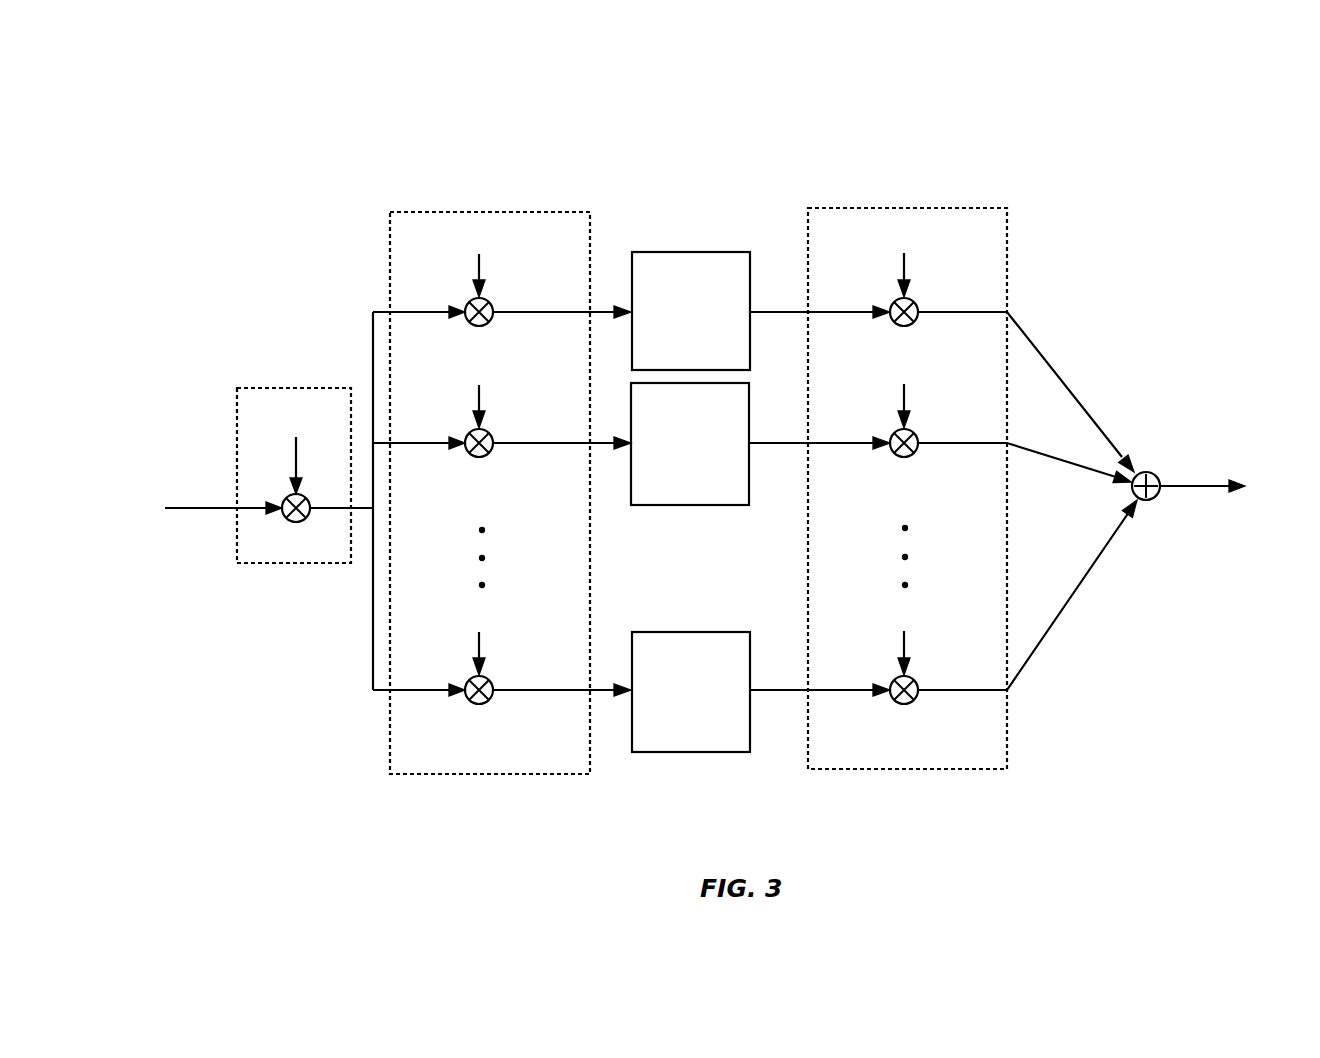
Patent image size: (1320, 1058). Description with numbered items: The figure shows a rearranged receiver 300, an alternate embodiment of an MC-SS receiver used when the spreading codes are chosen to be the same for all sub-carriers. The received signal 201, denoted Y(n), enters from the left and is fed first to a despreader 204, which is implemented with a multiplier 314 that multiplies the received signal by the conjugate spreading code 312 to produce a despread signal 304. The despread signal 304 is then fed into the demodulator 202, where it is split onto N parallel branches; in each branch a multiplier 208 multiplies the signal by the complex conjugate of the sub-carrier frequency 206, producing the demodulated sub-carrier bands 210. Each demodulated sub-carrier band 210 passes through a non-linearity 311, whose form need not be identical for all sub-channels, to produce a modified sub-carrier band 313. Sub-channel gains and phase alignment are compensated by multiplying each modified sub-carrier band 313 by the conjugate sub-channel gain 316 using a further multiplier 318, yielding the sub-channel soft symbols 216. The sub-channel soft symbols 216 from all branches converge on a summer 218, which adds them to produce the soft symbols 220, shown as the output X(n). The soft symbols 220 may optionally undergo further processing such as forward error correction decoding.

The rearranged receiver 300 is at (250, 88).
The received signal 201 is at (224, 505).
The despreader 204 is at (269, 388).
The conjugate spreading code 312 is at (296, 468).
The multiplier 314 is at (296, 524).
The despread signal 304 is at (361, 506).
The demodulator 202 is at (403, 212).
The complex conjugate of the sub-carrier frequencies 206 is at (478, 268).
The multipliers 208 is at (488, 326).
The demodulated sub-carrier bands 210 is at (596, 308).
The non-linearity 311 is at (690, 252).
The modified sub-carrier bands 313 is at (760, 312).
The conjugate sub-channel gains 316 is at (868, 208).
The multipliers 318 is at (914, 326).
The sub-channel soft symbols 216 is at (1045, 361).
The summer 218 is at (1147, 471).
The soft symbols 220 is at (1197, 482).